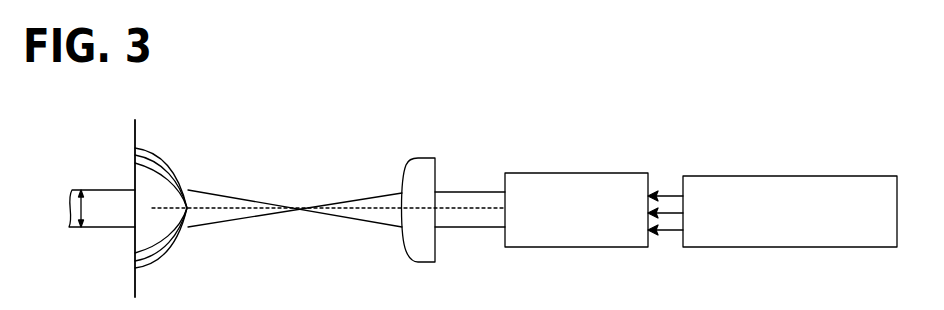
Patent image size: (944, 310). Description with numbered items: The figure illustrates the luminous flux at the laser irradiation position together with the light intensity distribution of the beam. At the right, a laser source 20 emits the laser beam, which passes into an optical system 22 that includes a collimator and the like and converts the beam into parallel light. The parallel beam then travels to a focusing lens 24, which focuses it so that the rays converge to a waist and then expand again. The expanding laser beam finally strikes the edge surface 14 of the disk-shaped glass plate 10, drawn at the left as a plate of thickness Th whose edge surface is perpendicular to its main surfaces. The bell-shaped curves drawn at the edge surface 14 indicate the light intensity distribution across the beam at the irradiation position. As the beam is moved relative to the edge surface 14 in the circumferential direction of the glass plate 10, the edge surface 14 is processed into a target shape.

The disk-shaped glass plate 10 is at (107, 228).
The edge surface 14 is at (134, 186).
The laser source 20 is at (787, 176).
The optical system 22 is at (576, 173).
The focusing lens 24 is at (421, 157).